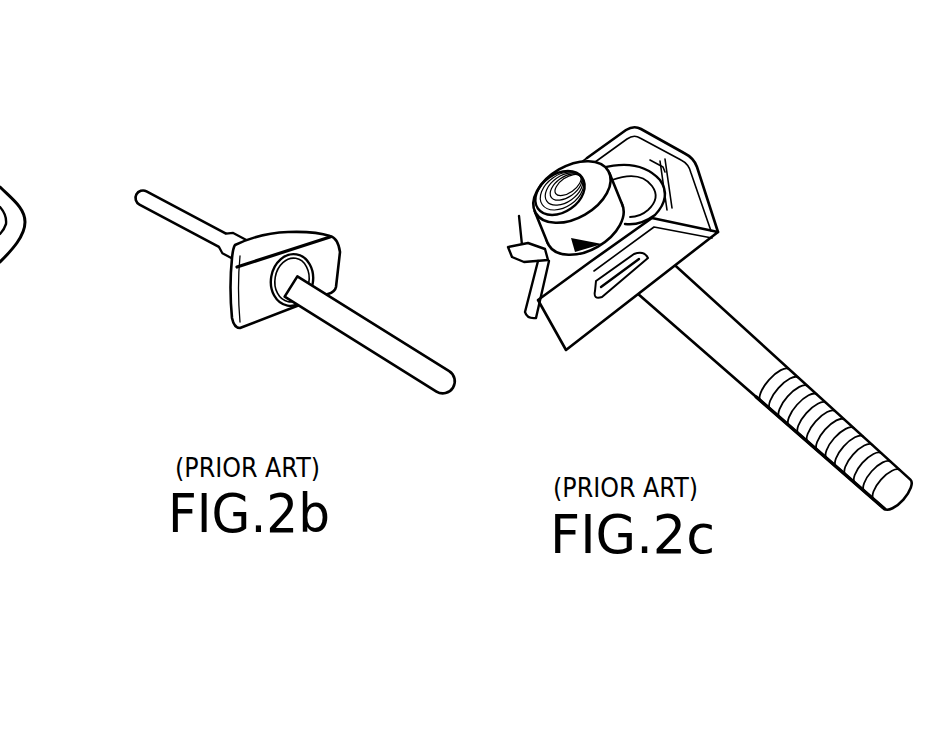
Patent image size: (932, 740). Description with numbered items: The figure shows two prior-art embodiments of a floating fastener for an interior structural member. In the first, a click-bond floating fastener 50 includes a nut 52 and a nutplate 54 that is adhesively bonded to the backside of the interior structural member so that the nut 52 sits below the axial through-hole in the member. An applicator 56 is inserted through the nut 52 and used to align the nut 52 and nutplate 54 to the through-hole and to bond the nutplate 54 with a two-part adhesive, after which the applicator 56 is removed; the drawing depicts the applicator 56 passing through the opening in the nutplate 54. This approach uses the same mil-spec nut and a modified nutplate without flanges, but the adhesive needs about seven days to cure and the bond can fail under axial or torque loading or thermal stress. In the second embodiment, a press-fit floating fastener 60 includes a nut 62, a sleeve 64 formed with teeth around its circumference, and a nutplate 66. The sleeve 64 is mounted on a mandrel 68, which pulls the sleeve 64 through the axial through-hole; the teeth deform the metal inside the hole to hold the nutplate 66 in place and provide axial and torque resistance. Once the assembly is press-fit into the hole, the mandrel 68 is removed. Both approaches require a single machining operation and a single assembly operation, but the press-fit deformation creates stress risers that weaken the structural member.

In FIG. 2B, the click-bond floating fastener 50 is at (158, 104).
In FIG. 2B, the nut 52 is at (266, 316).
In FIG. 2B, the nutplate 54 is at (236, 282).
In FIG. 2B, the applicator 56 is at (333, 313).
In FIG. 2C, the press-fit floating fastener 60 is at (478, 99).
In FIG. 2C, the nut 62 is at (531, 186).
In FIG. 2C, the sleeve 64 is at (540, 281).
In FIG. 2C, the nutplate 66 is at (689, 179).
In FIG. 2C, the mandrel 68 is at (698, 330).